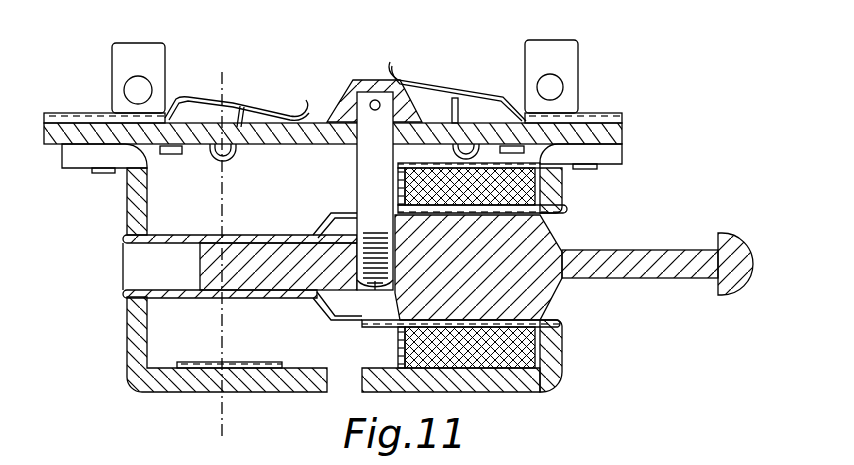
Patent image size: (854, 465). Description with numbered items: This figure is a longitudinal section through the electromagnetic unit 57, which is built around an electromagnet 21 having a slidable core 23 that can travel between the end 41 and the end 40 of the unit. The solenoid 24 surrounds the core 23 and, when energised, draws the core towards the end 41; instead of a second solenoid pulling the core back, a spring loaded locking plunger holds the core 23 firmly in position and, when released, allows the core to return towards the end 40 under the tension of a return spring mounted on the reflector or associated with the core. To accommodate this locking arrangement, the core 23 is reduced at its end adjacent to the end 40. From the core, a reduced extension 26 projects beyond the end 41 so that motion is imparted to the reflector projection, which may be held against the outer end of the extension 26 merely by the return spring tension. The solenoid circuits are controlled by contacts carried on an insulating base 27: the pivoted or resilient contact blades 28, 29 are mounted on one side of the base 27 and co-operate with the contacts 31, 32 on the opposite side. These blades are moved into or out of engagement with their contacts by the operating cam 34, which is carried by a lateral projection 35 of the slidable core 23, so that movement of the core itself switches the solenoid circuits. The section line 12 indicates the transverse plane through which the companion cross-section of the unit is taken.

The section line 12 is at (192, 70).
The electromagnet 21 is at (523, 383).
The slidable core 23 is at (548, 245).
The solenoid 24 is at (403, 355).
The reduced extension 26 is at (706, 278).
The insulating base 27 is at (622, 133).
The contact blade 28 is at (465, 87).
The contact blade 29 is at (237, 107).
The contact 31 is at (469, 127).
The contact 32 is at (237, 155).
The operating cam 34 is at (353, 80).
The lateral projection 35 is at (375, 191).
The end of the unit 40 is at (123, 275).
The end of the unit 41 is at (562, 302).
The electromagnetic unit 57 is at (568, 363).